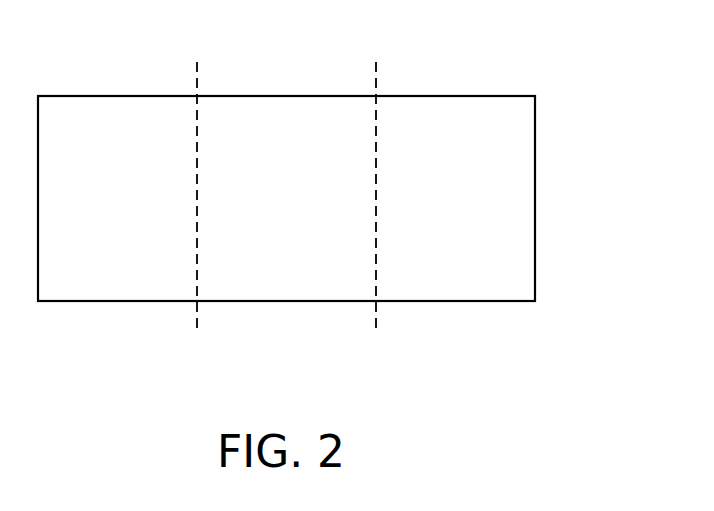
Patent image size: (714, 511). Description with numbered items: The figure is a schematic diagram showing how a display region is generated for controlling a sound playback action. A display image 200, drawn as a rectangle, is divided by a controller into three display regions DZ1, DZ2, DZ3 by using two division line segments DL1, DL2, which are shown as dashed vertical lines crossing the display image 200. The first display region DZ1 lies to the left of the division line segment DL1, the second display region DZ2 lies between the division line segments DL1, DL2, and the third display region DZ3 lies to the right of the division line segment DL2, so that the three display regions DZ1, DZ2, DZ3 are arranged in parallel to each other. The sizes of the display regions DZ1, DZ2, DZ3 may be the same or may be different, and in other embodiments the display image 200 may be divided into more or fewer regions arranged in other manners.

The display image 200 is at (638, 412).
The division line segment DL1 is at (197, 85).
The division line segment DL2 is at (376, 85).
The display region DZ1 is at (115, 271).
The display region DZ2 is at (285, 271).
The display region DZ3 is at (458, 271).